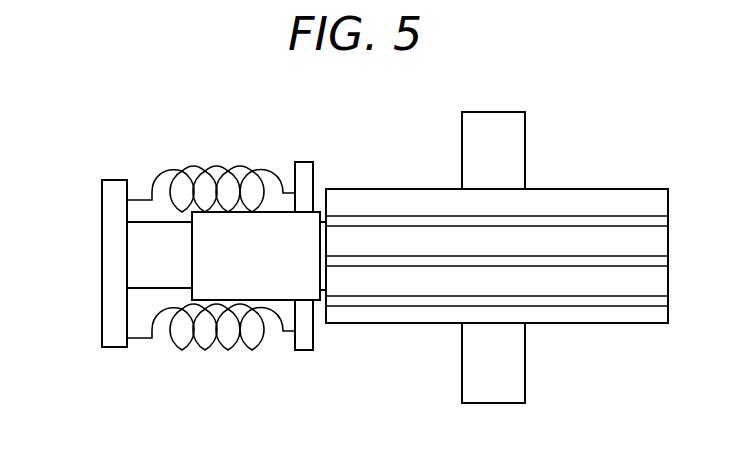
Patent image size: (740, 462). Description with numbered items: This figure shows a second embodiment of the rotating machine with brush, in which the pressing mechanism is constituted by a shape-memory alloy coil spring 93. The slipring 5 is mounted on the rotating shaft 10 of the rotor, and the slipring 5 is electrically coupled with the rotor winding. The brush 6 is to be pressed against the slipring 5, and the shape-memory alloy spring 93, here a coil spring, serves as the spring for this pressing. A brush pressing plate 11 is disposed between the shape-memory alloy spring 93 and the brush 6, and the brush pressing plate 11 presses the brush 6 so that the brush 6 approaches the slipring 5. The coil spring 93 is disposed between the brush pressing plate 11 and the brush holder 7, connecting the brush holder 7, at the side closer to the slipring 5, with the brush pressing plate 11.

The slipring 5 is at (388, 325).
The brush 6 is at (140, 252).
The brush holder 7 is at (303, 222).
The rotating shaft 10 is at (518, 148).
The brush pressing plate 11 is at (107, 273).
The shape-memory alloy spring 93 is at (227, 345).